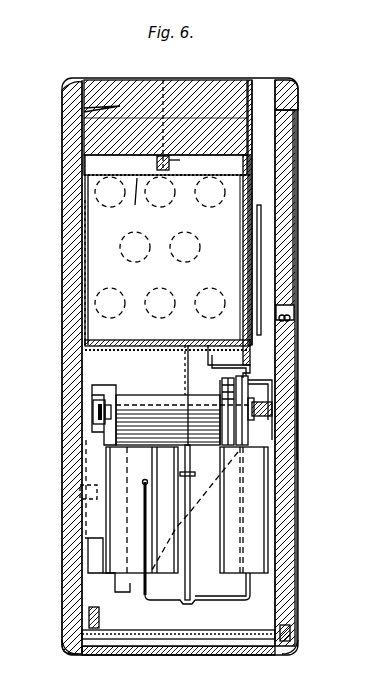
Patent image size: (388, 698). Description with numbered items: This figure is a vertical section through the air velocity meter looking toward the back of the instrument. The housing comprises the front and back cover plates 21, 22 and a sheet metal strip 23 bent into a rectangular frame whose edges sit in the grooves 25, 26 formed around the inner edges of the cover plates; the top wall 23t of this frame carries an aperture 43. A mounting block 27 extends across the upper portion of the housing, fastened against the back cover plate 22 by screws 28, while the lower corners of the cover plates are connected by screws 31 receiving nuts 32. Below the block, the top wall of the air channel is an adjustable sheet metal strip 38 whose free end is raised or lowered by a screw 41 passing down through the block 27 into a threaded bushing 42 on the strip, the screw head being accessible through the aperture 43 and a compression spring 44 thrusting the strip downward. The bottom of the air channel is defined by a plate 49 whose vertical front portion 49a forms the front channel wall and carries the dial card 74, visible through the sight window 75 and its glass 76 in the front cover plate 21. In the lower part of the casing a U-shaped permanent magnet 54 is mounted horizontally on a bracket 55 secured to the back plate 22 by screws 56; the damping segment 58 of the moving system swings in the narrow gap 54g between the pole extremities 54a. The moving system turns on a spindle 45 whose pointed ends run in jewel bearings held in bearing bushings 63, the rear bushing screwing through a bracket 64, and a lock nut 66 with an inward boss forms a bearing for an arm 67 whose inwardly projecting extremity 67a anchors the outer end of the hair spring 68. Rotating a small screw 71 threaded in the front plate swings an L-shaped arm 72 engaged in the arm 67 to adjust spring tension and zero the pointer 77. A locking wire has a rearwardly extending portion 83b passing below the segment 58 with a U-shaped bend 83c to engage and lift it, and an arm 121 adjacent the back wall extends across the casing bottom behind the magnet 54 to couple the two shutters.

The front cover plate 21 is at (290, 478).
The back cover plate 22 is at (62, 368).
The sheet metal strip 23 is at (190, 652).
The top wall 23t is at (262, 80).
The groove 25 is at (290, 656).
The groove 26 is at (74, 656).
The block 27 is at (137, 96).
The screws 28 is at (84, 110).
The screws 31 is at (152, 640).
The nuts 32 is at (292, 630).
The adjustable member 38 is at (155, 250).
The screw 41 is at (200, 79).
The threaded bushing 42 is at (157, 163).
The aperture 43 is at (163, 80).
The compression spring 44 is at (170, 163).
The pintle or arbor 45 is at (138, 405).
The plate 49 is at (250, 160).
The vertical front portion 49a is at (243, 214).
The permanent magnet 54 is at (255, 556).
The pole extremities 54a is at (195, 560).
The gap 54g is at (190, 530).
The bracket 55 is at (100, 518).
The screws 56 is at (84, 494).
The damping segment 58 is at (136, 576).
The bearing bushings 63 is at (93, 410).
The bracket 64 is at (92, 390).
The lock nut 66 is at (95, 422).
The arm 67 is at (252, 430).
The inwardly projecting extremity 67a is at (248, 372).
The hair spring 68 is at (230, 384).
The screw 71 is at (297, 426).
The L-shaped arm 72 is at (272, 403).
The card or plate 74 is at (250, 194).
The sight window 75 is at (293, 265).
The glass 76 is at (283, 280).
The pointer 77 is at (262, 297).
The rearwardly extending portion 83b is at (222, 599).
The U-shaped bend 83c is at (167, 610).
The arm 121 is at (88, 620).